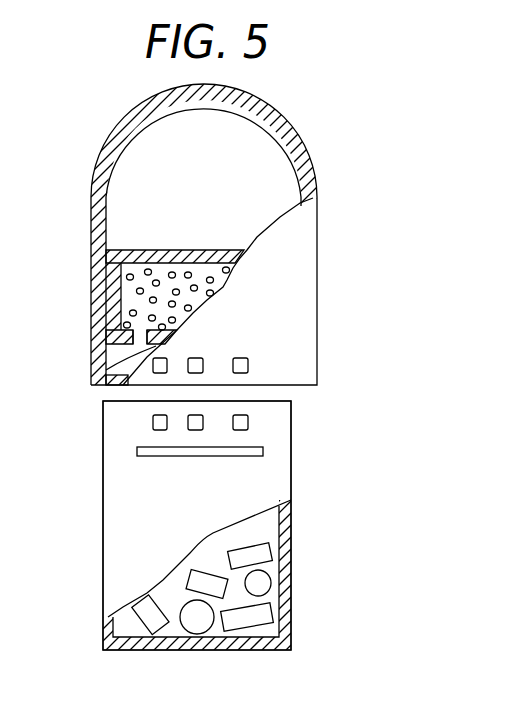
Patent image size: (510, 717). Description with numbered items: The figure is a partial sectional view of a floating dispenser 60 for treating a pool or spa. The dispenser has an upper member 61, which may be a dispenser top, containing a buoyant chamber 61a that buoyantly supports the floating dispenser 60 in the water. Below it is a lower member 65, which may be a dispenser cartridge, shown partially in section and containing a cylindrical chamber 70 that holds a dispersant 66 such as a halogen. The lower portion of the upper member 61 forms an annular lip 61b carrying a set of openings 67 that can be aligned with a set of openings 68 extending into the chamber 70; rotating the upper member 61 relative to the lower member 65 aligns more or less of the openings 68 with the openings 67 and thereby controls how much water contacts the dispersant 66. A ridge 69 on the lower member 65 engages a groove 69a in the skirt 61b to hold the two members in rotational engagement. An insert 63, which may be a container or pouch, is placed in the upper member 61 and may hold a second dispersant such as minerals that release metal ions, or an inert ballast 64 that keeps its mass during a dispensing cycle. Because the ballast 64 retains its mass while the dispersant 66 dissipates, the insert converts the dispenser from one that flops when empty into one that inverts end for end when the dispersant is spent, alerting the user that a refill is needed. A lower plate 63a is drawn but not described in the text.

The floating dispenser 60 is at (308, 112).
The upper member 61 is at (317, 243).
The buoyant chamber 61a is at (232, 189).
The annular lip 61b is at (88, 352).
The insert 63 is at (145, 250).
The lower plate 63a is at (90, 371).
The ballast 64 is at (140, 303).
The lower member 65 is at (292, 520).
The dispersant 66 is at (248, 557).
The openings 67 is at (205, 359).
The openings 68 is at (198, 416).
The ridge 69 is at (165, 456).
The groove 69a is at (113, 382).
The chamber 70 is at (266, 518).